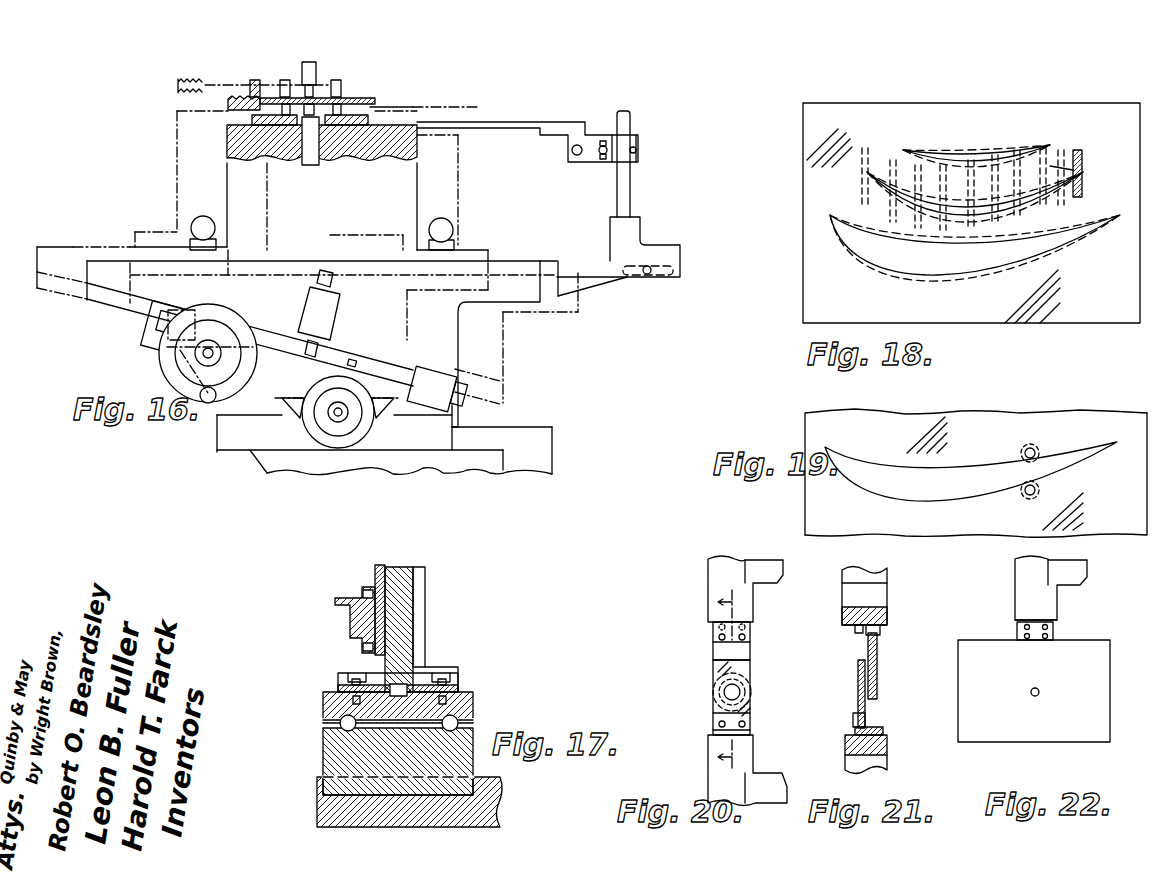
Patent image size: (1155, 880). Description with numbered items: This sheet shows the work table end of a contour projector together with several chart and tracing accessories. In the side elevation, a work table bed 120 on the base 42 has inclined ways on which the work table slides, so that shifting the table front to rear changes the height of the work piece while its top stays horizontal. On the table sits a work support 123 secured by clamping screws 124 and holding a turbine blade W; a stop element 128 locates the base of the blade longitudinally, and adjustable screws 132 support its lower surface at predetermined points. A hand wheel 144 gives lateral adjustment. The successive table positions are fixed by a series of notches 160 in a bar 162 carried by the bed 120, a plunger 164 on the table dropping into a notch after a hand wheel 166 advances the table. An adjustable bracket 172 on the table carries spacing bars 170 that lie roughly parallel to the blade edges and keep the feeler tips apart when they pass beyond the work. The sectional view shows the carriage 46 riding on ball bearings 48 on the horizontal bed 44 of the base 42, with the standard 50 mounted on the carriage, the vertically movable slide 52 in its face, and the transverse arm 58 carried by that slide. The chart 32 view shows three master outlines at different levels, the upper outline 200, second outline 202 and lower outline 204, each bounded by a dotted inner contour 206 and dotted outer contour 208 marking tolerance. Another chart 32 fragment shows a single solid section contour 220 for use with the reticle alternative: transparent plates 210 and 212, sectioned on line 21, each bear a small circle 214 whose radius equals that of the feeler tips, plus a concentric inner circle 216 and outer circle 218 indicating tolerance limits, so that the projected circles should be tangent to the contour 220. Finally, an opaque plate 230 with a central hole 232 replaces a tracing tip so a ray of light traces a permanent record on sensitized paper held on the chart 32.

In FIG. 16, the work support 123 is at (232, 175).
In FIG. 16, the turbine blade work piece W is at (355, 98).
In FIG. 16, the stop element 128 is at (262, 79).
In FIG. 16, the clamping screws 132 is at (145, 282).
In FIG. 16, the clamping screws 124 is at (192, 224).
In FIG. 16, the spacing bars 170 is at (502, 122).
In FIG. 16, the adjustable bracket 172 is at (637, 228).
In FIG. 16, the notched bar 162 is at (293, 356).
In FIG. 16, the hand wheel 166 is at (157, 357).
In FIG. 16, the plunger 164 is at (342, 312).
In FIG. 16, the notches 160 is at (260, 342).
In FIG. 16, the work table bed 120 is at (237, 412).
In FIG. 16, the hand wheel 144 is at (338, 446).
In FIG. 18, the chart 32 is at (852, 112).
In FIG. 19, the chart 32 is at (897, 425).
In FIG. 18, the upper outline 200 is at (977, 155).
In FIG. 18, the second outline 202 is at (897, 190).
In FIG. 18, the lower outline 204 is at (926, 278).
In FIG. 18, the dotted inner contour 206 is at (905, 238).
In FIG. 18, the dotted outer contour 208 is at (880, 266).
In FIG. 19, the section contour outline 220 is at (923, 472).
In FIG. 17, the base 42 is at (320, 810).
In FIG. 17, the bed 44 is at (332, 750).
In FIG. 17, the ball bearings 48 is at (342, 720).
In FIG. 17, the carriage 46 is at (330, 692).
In FIG. 17, the standard 50 is at (403, 610).
In FIG. 17, the slide 52 is at (380, 565).
In FIG. 17, the transverse arm 58 is at (335, 600).
In FIG. 20, the transparent plate 212 is at (713, 636).
In FIG. 21, the transparent plate 212 is at (876, 661).
In FIG. 20, the transparent plate 210 is at (715, 712).
In FIG. 21, the transparent plate 210 is at (859, 700).
In FIG. 20, the small circle 214 is at (741, 689).
In FIG. 20, the concentric inner circle 216 is at (725, 694).
In FIG. 20, the concentric outer circle 218 is at (723, 680).
In FIG. 20, the section line 21- 21 is at (730, 685).
In FIG. 22, the opaque plate 230 is at (978, 647).
In FIG. 22, the central hole 232 is at (1031, 695).